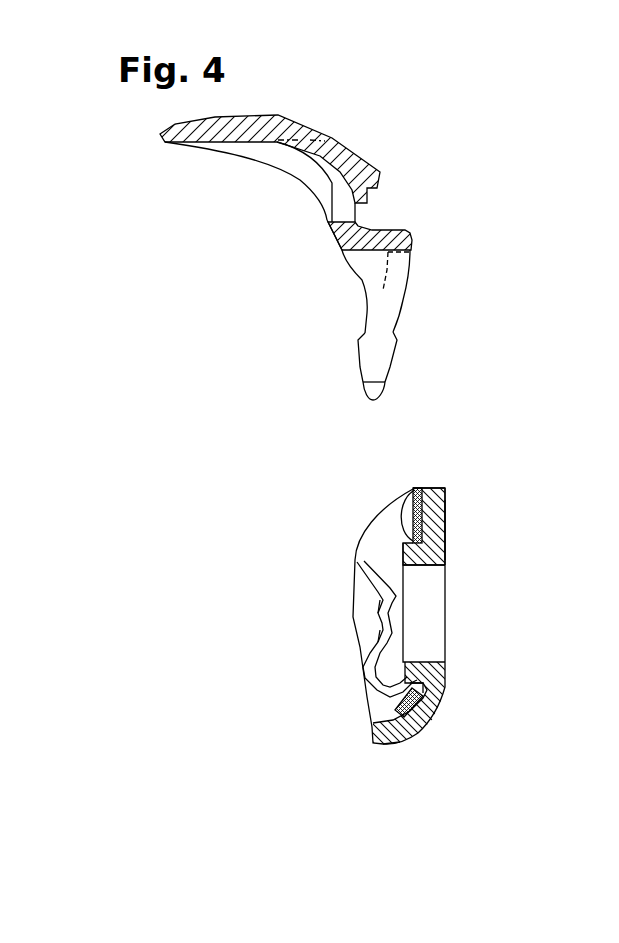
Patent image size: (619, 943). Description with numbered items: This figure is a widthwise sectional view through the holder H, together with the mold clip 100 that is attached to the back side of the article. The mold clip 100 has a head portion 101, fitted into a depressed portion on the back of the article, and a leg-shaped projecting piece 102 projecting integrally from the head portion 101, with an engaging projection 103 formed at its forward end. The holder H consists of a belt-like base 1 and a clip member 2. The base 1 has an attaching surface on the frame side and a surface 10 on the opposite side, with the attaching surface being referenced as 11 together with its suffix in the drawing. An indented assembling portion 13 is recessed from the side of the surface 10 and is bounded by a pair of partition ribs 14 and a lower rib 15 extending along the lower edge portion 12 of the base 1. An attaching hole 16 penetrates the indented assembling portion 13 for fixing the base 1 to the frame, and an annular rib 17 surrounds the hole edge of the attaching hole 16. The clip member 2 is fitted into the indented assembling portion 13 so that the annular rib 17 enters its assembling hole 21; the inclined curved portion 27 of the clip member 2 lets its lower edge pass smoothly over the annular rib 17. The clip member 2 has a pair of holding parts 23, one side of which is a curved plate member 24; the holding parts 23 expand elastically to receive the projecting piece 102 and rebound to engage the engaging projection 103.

The head portion 101 is at (278, 122).
The mold clip 100 is at (410, 232).
The projecting piece 102 is at (378, 293).
The engaging projection 103 is at (373, 352).
The holder H is at (467, 500).
The base 1 is at (445, 683).
The partition rib 14 is at (387, 547).
The surface 10 is at (447, 547).
The mounting portion 11 is at (447, 528).
The assembling hole 21 is at (415, 488).
The annular rib 17 is at (447, 573).
The attaching hole 16 is at (428, 623).
The clip member 2 is at (363, 680).
The holding part 23 is at (375, 619).
The curved plate member 24 is at (377, 639).
The indented assembling portion 13 is at (388, 713).
The lower edge portion 12 is at (420, 727).
The curved portion 27 is at (412, 728).
The lower rib 15 is at (407, 727).